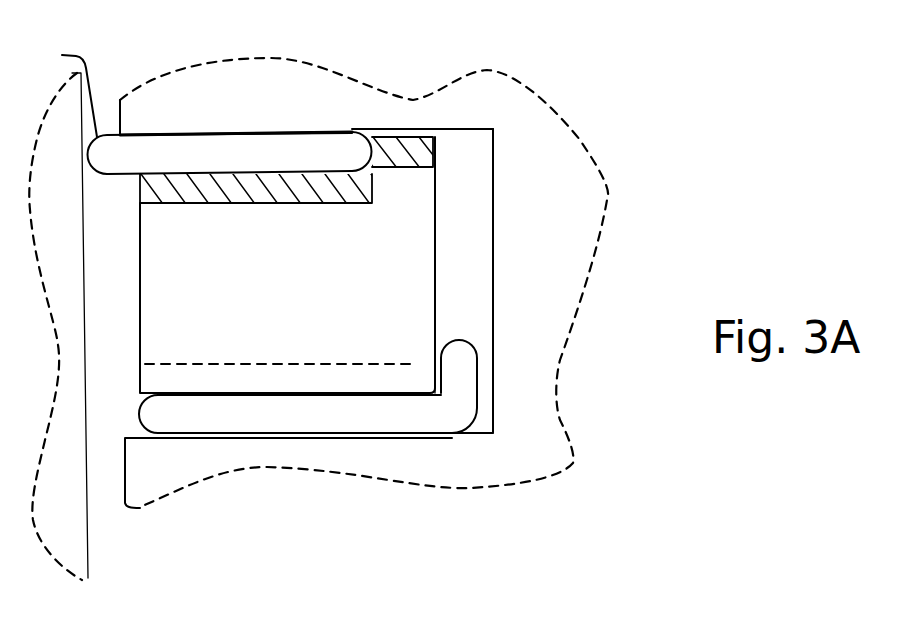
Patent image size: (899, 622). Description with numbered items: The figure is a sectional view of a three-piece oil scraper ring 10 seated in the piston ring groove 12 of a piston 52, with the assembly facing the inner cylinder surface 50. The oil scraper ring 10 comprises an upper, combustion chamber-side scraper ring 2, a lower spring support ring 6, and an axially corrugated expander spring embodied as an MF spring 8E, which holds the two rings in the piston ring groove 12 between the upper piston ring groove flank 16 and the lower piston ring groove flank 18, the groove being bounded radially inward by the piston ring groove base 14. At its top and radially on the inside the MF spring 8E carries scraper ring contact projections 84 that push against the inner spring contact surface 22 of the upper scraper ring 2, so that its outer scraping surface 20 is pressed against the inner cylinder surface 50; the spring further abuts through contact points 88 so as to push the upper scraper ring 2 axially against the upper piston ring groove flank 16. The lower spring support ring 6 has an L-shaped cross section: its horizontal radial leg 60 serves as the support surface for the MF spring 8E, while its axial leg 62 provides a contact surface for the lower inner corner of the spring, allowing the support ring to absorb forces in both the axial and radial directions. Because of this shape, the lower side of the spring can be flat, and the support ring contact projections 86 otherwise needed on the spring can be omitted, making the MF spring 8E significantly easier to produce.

The oil scraper ring 10 is at (758, 135).
The piston ring groove 12 is at (463, 279).
The piston ring groove base 14 is at (493, 262).
The upper piston ring groove flank 16 is at (457, 130).
The lower piston ring groove flank 18 is at (453, 435).
The outer scraping surface 20 is at (62, 90).
The inner spring contact surface 22 is at (368, 131).
The upper scraper ring 2 is at (230, 153).
The inner cylinder surface 50 is at (80, 240).
The piston 52 is at (364, 282).
The lower spring support ring 6 is at (413, 412).
The radial leg 60 is at (295, 415).
The axial leg 62 is at (459, 386).
The scraper ring contact projections 84 is at (407, 146).
The support ring contact projections 86 is at (428, 374).
The contact points 88 is at (317, 203).
The MF spring 8E is at (287, 265).